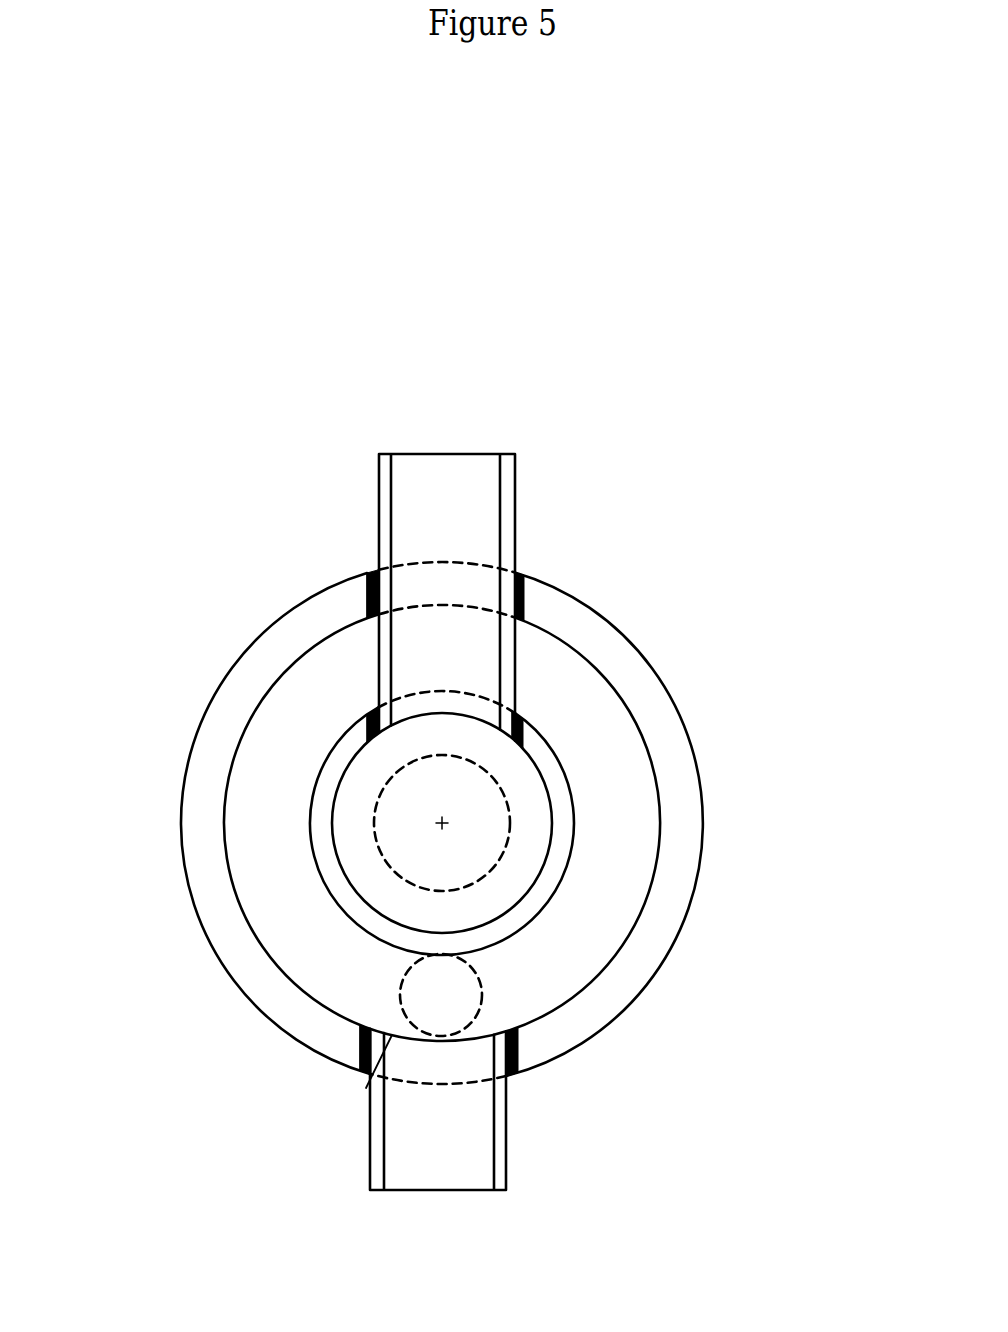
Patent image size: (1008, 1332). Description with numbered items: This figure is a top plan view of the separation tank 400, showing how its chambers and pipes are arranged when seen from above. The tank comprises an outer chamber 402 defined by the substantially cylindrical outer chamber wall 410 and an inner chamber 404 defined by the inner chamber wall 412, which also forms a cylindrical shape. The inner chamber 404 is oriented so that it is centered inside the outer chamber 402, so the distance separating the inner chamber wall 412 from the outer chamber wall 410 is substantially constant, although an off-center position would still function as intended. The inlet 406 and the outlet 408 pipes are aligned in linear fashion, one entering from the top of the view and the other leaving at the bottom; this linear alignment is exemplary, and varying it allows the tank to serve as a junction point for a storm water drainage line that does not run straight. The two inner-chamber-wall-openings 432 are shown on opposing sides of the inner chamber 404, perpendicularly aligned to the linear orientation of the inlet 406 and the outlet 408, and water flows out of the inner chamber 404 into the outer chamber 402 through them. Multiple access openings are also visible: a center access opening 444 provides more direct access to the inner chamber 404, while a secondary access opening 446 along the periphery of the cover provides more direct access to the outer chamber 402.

The separation tank 400 is at (245, 458).
The outer chamber 402 is at (442, 823).
The inner chamber 404 is at (446, 723).
The inlet 406 is at (505, 492).
The outlet 408 is at (495, 1148).
The outer chamber wall 410 is at (672, 887).
The inner chamber wall 412 is at (517, 910).
The inner-chamber-wall-opening 432 is at (327, 786).
The center access opening 444 is at (377, 845).
The secondary access opening 446 is at (400, 1005).